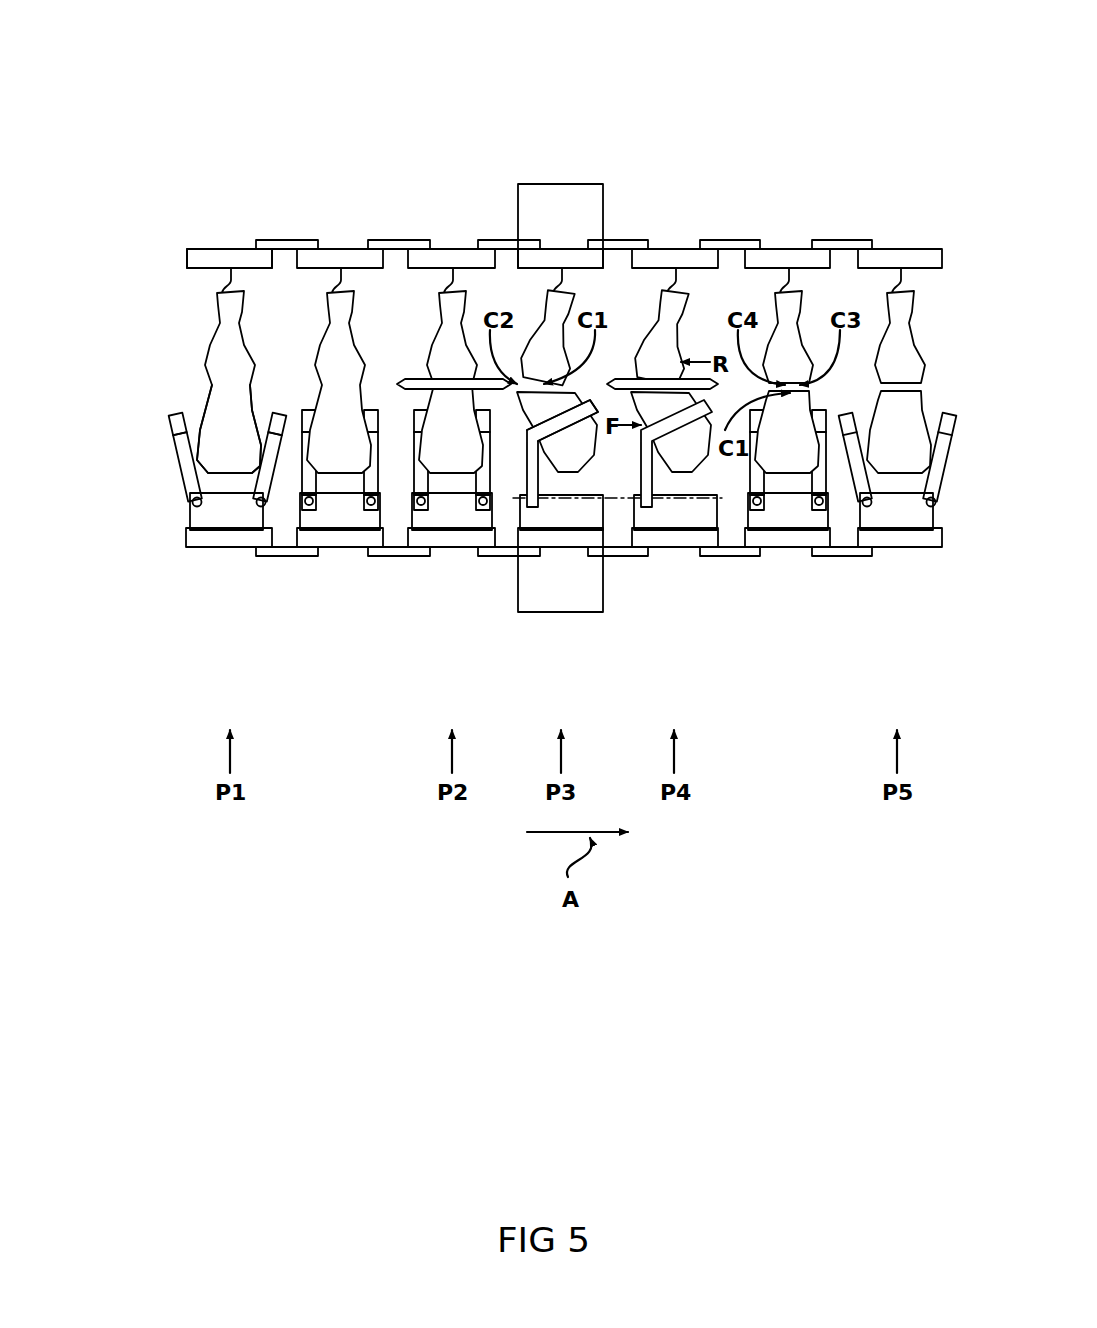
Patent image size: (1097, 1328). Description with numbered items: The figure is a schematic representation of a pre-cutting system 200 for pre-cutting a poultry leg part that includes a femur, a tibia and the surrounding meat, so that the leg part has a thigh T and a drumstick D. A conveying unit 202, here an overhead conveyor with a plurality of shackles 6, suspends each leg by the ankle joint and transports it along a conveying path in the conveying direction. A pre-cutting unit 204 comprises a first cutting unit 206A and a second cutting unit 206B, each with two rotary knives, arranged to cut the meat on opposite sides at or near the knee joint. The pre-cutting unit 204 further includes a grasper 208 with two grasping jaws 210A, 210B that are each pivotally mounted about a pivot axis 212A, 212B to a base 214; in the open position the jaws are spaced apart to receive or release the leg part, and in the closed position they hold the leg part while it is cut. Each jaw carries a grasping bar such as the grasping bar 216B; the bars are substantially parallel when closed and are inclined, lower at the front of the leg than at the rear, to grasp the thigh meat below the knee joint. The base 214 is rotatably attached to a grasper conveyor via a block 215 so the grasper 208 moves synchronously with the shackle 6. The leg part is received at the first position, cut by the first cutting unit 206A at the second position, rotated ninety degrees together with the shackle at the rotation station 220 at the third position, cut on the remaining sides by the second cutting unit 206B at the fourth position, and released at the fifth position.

The pre-cutting system 200 is at (813, 70).
The conveying unit 202 is at (250, 246).
The pre-cutting unit 204 is at (306, 219).
The shackle 6 is at (200, 247).
The rotation station 220 is at (557, 182).
The first cutting unit 206A is at (412, 374).
The second cutting unit 206B is at (613, 374).
The grasper 208 is at (362, 516).
The grasping jaw 210A is at (182, 467).
The grasping jaw 210B is at (277, 477).
The pivot axis 212A is at (190, 507).
The pivot axis 212B is at (267, 505).
The base 214 is at (220, 517).
The block 215 is at (230, 548).
The grasping bar 216B is at (167, 424).
The leg hook L is at (349, 298).
The drumstick D is at (222, 354).
The thigh T is at (210, 442).